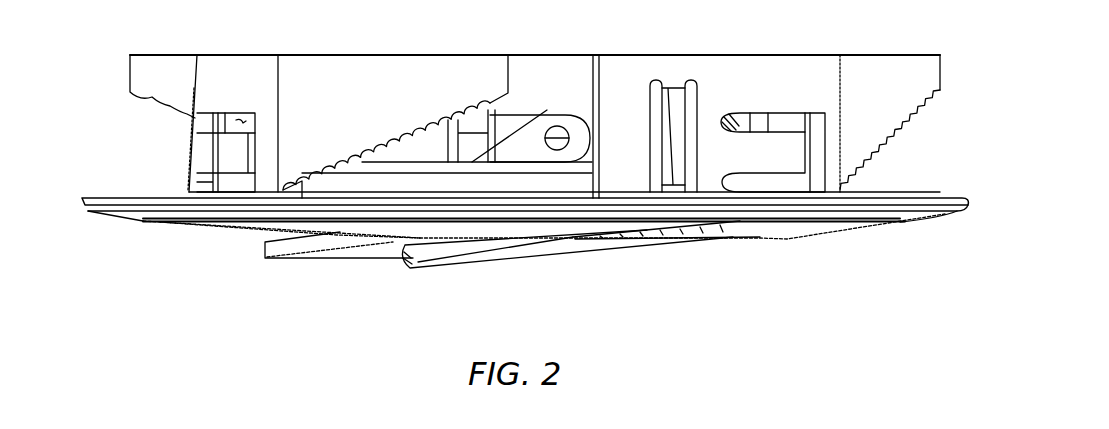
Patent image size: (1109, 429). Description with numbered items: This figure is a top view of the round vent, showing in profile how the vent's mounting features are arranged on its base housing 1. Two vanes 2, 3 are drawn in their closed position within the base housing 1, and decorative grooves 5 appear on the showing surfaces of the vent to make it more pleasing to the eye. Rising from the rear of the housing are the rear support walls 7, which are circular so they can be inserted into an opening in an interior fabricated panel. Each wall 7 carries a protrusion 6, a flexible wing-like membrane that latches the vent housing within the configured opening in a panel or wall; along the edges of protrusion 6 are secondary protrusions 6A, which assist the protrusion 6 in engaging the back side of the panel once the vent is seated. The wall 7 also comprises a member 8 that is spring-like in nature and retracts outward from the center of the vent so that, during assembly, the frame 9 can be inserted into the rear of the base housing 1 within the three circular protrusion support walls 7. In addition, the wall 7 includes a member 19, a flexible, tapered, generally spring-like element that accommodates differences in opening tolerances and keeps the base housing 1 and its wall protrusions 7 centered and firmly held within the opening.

The base housing 1 is at (340, 231).
The vane 2 is at (535, 253).
The vane 3 is at (373, 250).
The decorative grooves 5 is at (647, 230).
The protrusion 6 is at (167, 91).
The secondary protrusion 6A is at (414, 114).
The rear support wall 7 is at (245, 91).
The member 8 is at (229, 163).
The frame 9 is at (362, 184).
The member 19 is at (672, 88).